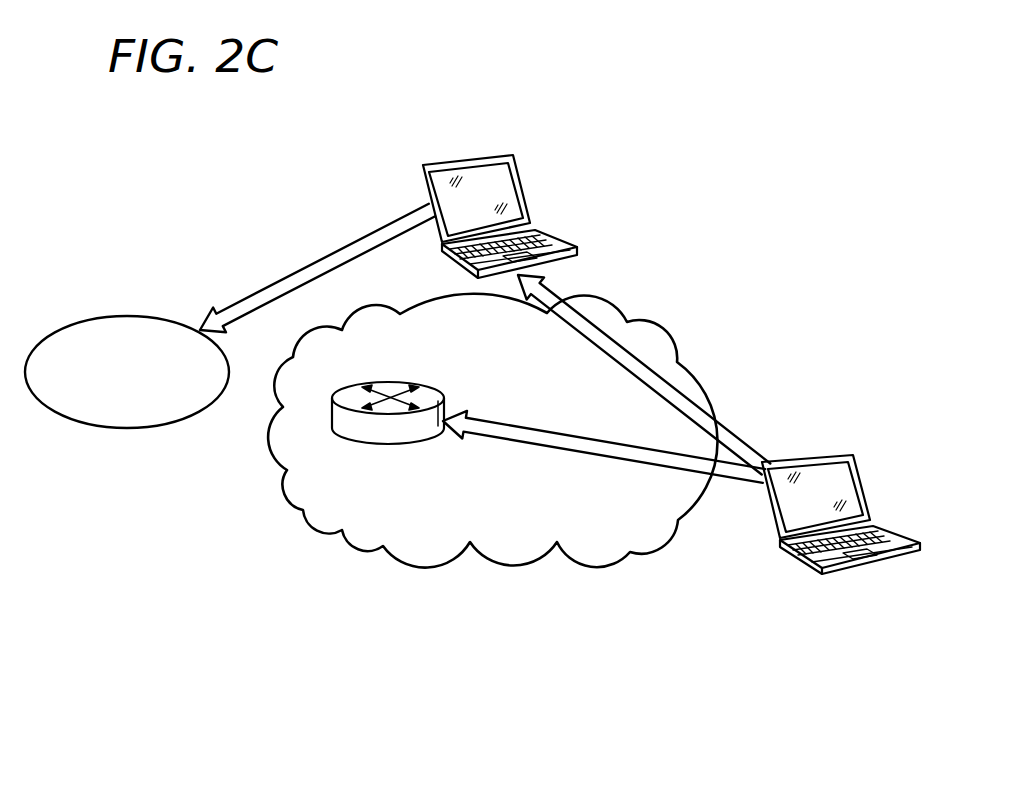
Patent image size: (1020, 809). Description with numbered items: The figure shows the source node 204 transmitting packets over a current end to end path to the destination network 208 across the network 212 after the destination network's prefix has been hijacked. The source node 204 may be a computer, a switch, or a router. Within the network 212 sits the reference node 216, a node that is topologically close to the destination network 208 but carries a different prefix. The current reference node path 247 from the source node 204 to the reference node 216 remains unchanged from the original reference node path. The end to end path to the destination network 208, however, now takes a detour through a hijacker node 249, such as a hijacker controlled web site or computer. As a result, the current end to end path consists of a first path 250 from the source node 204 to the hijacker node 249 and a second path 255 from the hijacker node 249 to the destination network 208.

The source node 204 is at (840, 653).
The destination network 208 is at (120, 322).
The network 212 is at (518, 558).
The reference node 216 is at (380, 522).
The current reference node path 247 is at (632, 460).
The hijacker node 249 is at (528, 97).
The first path 250 is at (632, 360).
The second path 255 is at (302, 272).